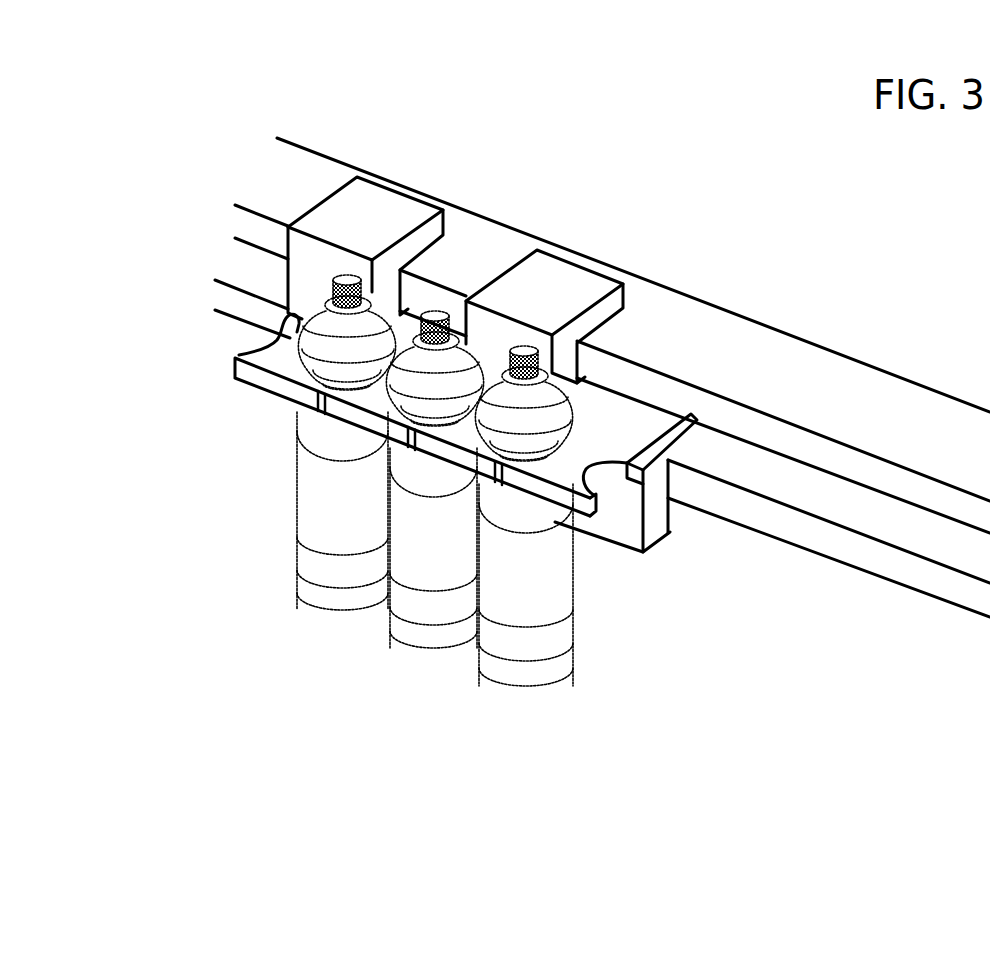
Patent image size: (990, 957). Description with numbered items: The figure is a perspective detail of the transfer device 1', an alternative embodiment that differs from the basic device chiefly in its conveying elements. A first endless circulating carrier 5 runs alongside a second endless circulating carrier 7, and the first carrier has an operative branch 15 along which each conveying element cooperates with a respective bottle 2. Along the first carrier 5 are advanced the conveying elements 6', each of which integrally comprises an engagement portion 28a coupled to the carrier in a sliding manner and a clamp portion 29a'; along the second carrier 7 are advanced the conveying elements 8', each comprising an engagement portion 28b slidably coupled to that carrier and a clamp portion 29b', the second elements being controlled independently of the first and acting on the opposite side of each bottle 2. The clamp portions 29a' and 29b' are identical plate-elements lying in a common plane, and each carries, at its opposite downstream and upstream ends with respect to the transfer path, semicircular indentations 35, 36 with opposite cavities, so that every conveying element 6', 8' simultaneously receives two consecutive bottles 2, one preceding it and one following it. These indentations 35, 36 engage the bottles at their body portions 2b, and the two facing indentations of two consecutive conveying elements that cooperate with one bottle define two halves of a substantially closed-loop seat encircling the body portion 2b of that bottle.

The transfer device 1' is at (542, 418).
The bottle 2 is at (422, 463).
The body portion 2b is at (299, 560).
The first endless circulating carrier 5 is at (893, 392).
The conveying element 6' is at (457, 227).
The second endless circulating carrier 7 is at (846, 567).
The conveying element 8' is at (440, 538).
The operative branch 15 is at (753, 356).
The engagement portion 28a is at (350, 203).
The engagement portion 28b is at (679, 499).
The clamp portion 29a' is at (269, 549).
The clamp portion 29b' is at (432, 545).
The semicircular indentation 35 is at (637, 462).
The semicircular indentation 36 is at (258, 347).